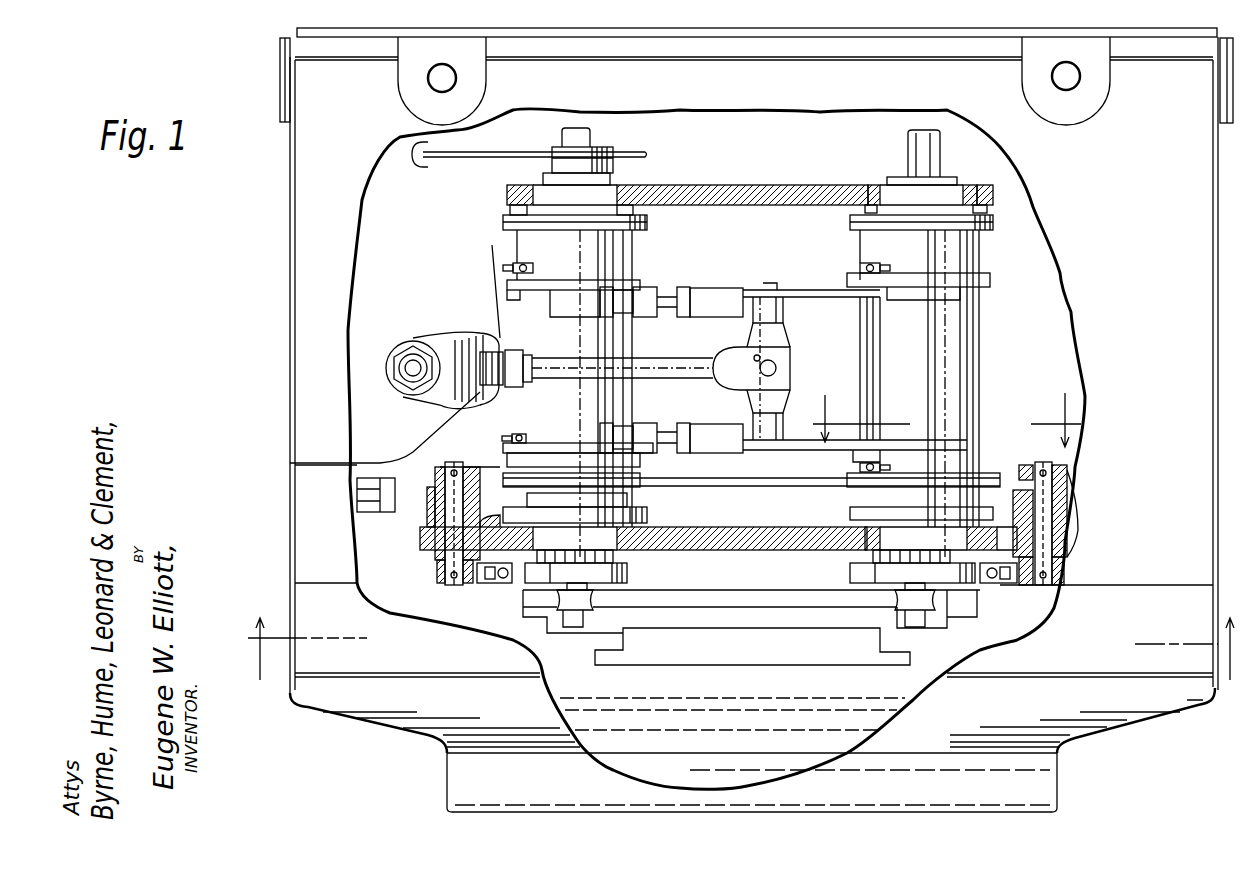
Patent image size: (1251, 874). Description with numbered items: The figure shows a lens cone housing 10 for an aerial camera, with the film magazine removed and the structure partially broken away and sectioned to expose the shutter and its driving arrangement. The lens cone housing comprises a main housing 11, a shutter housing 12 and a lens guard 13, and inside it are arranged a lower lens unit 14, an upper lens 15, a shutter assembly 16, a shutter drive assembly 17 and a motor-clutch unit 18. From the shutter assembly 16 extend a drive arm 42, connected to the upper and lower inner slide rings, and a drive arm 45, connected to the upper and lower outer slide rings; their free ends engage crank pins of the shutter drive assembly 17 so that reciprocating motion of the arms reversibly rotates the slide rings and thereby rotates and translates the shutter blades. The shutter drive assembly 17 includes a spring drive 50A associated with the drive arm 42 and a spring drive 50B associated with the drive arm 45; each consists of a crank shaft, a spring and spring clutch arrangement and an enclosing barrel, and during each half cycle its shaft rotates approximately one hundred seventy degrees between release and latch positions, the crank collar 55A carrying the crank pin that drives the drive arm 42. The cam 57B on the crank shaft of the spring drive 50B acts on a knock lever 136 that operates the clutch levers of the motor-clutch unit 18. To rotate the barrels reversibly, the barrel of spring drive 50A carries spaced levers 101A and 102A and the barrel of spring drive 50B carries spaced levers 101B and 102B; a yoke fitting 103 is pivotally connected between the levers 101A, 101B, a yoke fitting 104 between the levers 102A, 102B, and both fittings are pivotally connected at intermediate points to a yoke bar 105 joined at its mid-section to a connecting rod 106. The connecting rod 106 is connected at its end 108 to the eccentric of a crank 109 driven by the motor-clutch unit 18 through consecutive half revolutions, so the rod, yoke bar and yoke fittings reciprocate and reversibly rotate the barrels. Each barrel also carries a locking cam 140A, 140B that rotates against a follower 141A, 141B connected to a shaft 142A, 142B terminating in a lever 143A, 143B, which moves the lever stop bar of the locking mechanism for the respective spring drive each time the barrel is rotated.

The lens cone housing 10 is at (271, 409).
The main housing 11 is at (1200, 284).
The shutter housing 12 is at (1205, 634).
The lens guard 13 is at (1123, 722).
The lower lens unit 14 is at (587, 720).
The upper lens 15 is at (810, 493).
The shutter assembly 16 is at (851, 598).
The shutter drive assembly 17 is at (766, 263).
The motor-clutch unit 18 is at (385, 298).
The drive arm 42 is at (933, 613).
The drive arm 45 is at (593, 613).
The spring drive 50A is at (962, 183).
The spring drive 50B is at (640, 184).
The crank collar 55A is at (627, 568).
The cam 57B is at (605, 148).
The lever 101A is at (985, 299).
The lever 101B is at (513, 281).
The lever 102A is at (957, 450).
The lever 102B is at (538, 453).
The yoke fitting 103 is at (803, 287).
The yoke fitting 104 is at (790, 453).
The yoke bar 105 is at (792, 345).
The connecting rod 106 is at (653, 360).
The end of connecting rod 108 is at (410, 393).
The crank 109 is at (448, 333).
The knock lever 136 is at (516, 152).
The locking cam 140A is at (993, 473).
The locking cam 140B is at (507, 467).
The follower 141A is at (1065, 465).
The follower 141B is at (475, 467).
The shaft 142A is at (1042, 531).
The shaft 142B is at (427, 500).
The lever 143A is at (1021, 592).
The lever 143B is at (473, 583).